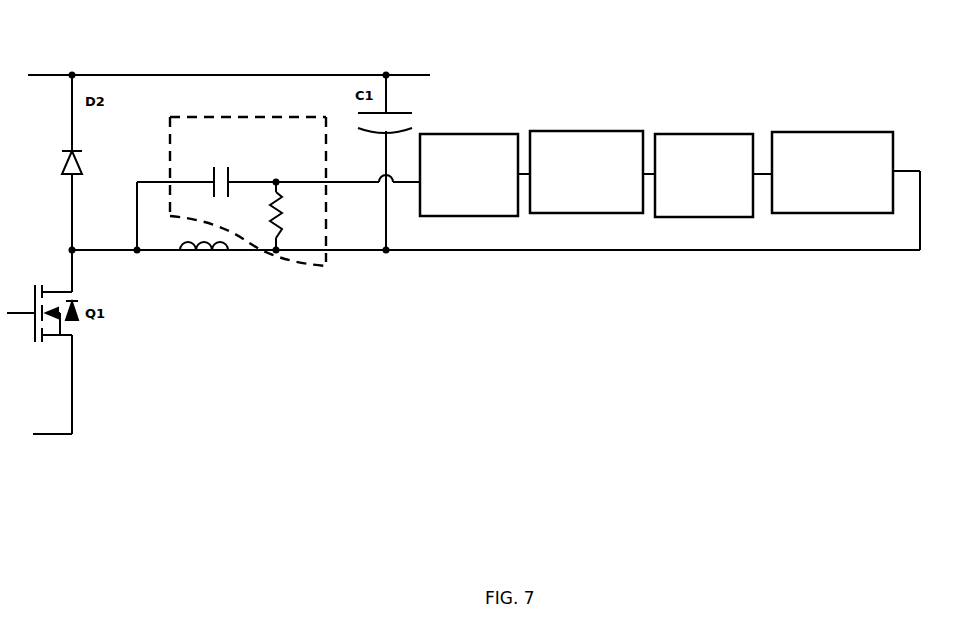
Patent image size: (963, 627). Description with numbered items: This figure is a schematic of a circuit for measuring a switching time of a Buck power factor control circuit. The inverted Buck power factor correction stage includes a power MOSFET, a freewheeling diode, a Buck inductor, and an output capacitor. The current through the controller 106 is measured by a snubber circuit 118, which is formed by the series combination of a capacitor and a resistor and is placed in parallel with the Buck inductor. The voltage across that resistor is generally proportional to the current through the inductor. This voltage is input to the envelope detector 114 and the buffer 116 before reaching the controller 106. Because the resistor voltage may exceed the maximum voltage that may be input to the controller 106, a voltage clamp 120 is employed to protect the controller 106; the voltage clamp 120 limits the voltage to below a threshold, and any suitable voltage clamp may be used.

The snubber circuit 118 is at (203, 116).
The voltage clamp 120 is at (469, 175).
The envelope detector 114 is at (586, 172).
The buffer 116 is at (704, 175).
The controller 106 is at (832, 172).